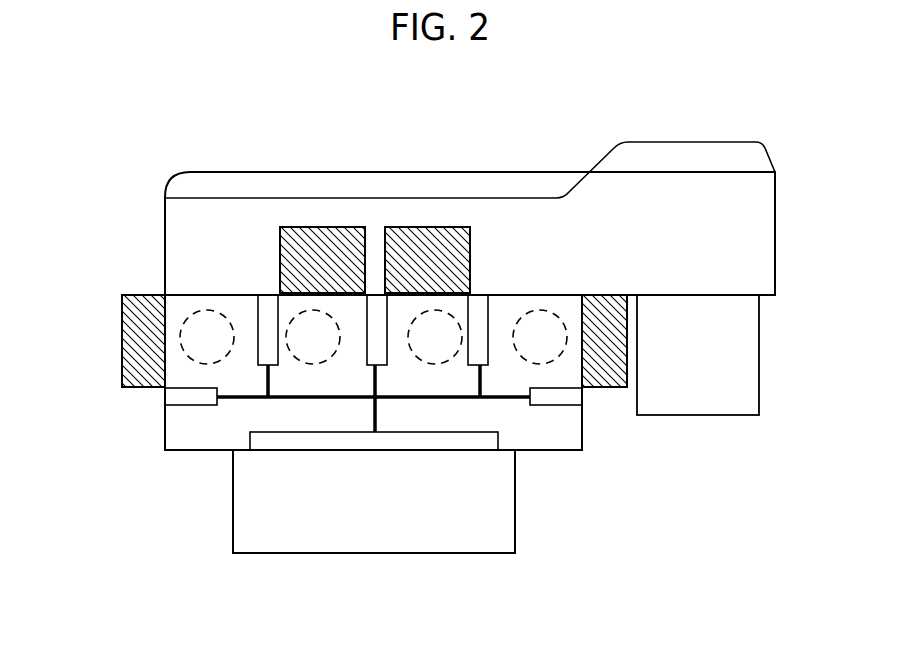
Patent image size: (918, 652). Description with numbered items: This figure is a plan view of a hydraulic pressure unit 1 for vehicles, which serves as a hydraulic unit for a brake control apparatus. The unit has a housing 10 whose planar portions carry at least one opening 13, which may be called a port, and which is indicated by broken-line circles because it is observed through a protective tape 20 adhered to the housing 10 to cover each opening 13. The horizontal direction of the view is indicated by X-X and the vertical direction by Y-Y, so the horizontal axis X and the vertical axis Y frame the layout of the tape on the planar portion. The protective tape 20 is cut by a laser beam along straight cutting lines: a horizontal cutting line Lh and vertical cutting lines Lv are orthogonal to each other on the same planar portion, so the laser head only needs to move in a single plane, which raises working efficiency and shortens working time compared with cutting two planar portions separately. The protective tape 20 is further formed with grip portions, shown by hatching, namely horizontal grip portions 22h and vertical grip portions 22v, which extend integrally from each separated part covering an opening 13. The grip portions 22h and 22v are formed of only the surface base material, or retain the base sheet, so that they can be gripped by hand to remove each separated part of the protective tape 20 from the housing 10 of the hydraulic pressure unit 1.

The hydraulic pressure unit 1 is at (517, 140).
The housing 10 is at (585, 432).
The opening 13 is at (200, 322).
The protective tape 20 is at (213, 430).
The vertical grip portions 22v is at (299, 237).
The horizontal grip portions 22h is at (122, 313).
The horizontal cutting line Lh is at (495, 400).
The vertical cutting line Lv is at (378, 413).
The horizontal direction X is at (820, 397).
The vertical direction Y is at (375, 603).